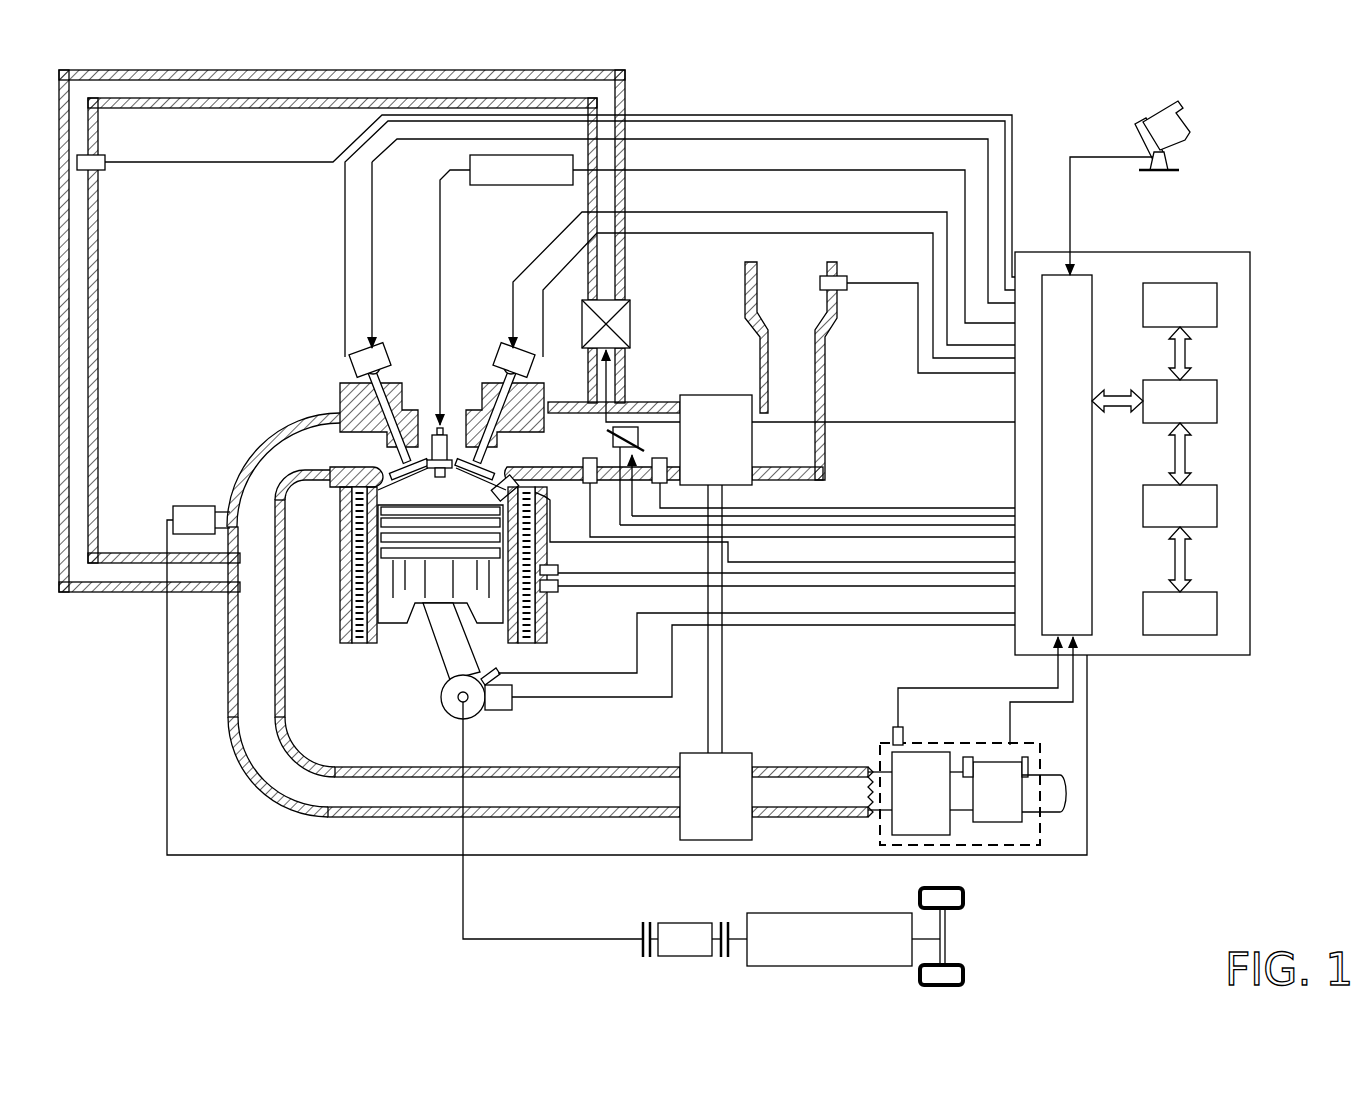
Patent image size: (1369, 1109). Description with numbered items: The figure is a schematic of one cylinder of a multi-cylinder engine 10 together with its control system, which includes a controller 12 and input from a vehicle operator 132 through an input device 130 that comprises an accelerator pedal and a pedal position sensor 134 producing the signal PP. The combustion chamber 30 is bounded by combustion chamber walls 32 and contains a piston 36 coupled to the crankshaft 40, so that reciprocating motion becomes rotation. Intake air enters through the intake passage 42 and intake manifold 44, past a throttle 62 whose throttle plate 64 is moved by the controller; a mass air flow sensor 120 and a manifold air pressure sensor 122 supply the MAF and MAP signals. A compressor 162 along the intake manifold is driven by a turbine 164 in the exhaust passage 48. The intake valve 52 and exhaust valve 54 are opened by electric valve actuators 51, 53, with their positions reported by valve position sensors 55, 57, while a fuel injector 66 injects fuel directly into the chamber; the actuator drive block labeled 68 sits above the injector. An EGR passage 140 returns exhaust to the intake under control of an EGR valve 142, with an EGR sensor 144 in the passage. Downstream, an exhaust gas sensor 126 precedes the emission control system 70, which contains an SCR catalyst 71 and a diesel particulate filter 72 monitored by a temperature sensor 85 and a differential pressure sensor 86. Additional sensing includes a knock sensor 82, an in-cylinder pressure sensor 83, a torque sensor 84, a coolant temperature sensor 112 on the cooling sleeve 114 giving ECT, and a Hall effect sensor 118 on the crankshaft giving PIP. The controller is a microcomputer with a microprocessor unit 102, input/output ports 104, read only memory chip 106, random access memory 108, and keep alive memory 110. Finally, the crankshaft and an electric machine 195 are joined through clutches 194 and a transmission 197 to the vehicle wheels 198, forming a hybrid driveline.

The engine 10 is at (262, 330).
The controller 12 is at (1245, 255).
The combustion chamber 30 is at (415, 490).
The combustion chamber walls 32 is at (378, 630).
The piston 36 is at (425, 590).
The crankshaft 40 is at (447, 715).
The intake passage 42 is at (791, 371).
The intake manifold 44 is at (664, 441).
The exhaust passage 48 is at (550, 615).
The electric valve actuator 51 is at (507, 348).
The intake valve 52 is at (485, 452).
The electric valve actuator 53 is at (380, 348).
The exhaust valve 54 is at (370, 440).
The valve position sensor 55 is at (522, 368).
The valve position sensor 57 is at (362, 368).
The throttle 62 is at (620, 427).
The throttle plate 64 is at (640, 430).
The fuel injector 66 is at (442, 425).
The driver 68 is at (550, 188).
The emission control system 70 is at (915, 745).
The SCR catalyst 71 is at (909, 793).
The diesel particulate filter 72 is at (1008, 789).
The knock sensor 82 is at (560, 590).
The in-cylinder pressure sensor 83 is at (530, 487).
The torque sensor 84 is at (577, 672).
The emissions control system temperature sensor 85 is at (893, 742).
The differential pressure sensor 86 is at (1012, 750).
The microprocessor unit 102 is at (1217, 395).
The input/output ports 104 is at (1097, 290).
The read only memory chip 106 is at (1217, 300).
The random access memory 108 is at (1217, 505).
The keep alive memory 110 is at (1217, 610).
The temperature sensor 112 is at (548, 565).
The cooling sleeve 114 is at (540, 590).
The Hall effect sensor 118 is at (508, 710).
The mass air flow sensor 120 is at (838, 276).
The manifold air pressure sensor 122 is at (586, 458).
The exhaust gas sensor 126 is at (173, 512).
The input device 130 is at (1145, 140).
The vehicle operator 132 is at (1185, 118).
The pedal position sensor 134 is at (1180, 160).
The EGR passage 140 is at (625, 100).
The EGR valve 142 is at (630, 325).
The EGR sensor 144 is at (95, 170).
The compressor 162 is at (716, 574).
The turbine 164 is at (716, 796).
The clutches 194 is at (643, 925).
The electric machine 195 is at (690, 923).
The transmission 197 is at (800, 913).
The vehicle wheels 198 is at (963, 975).